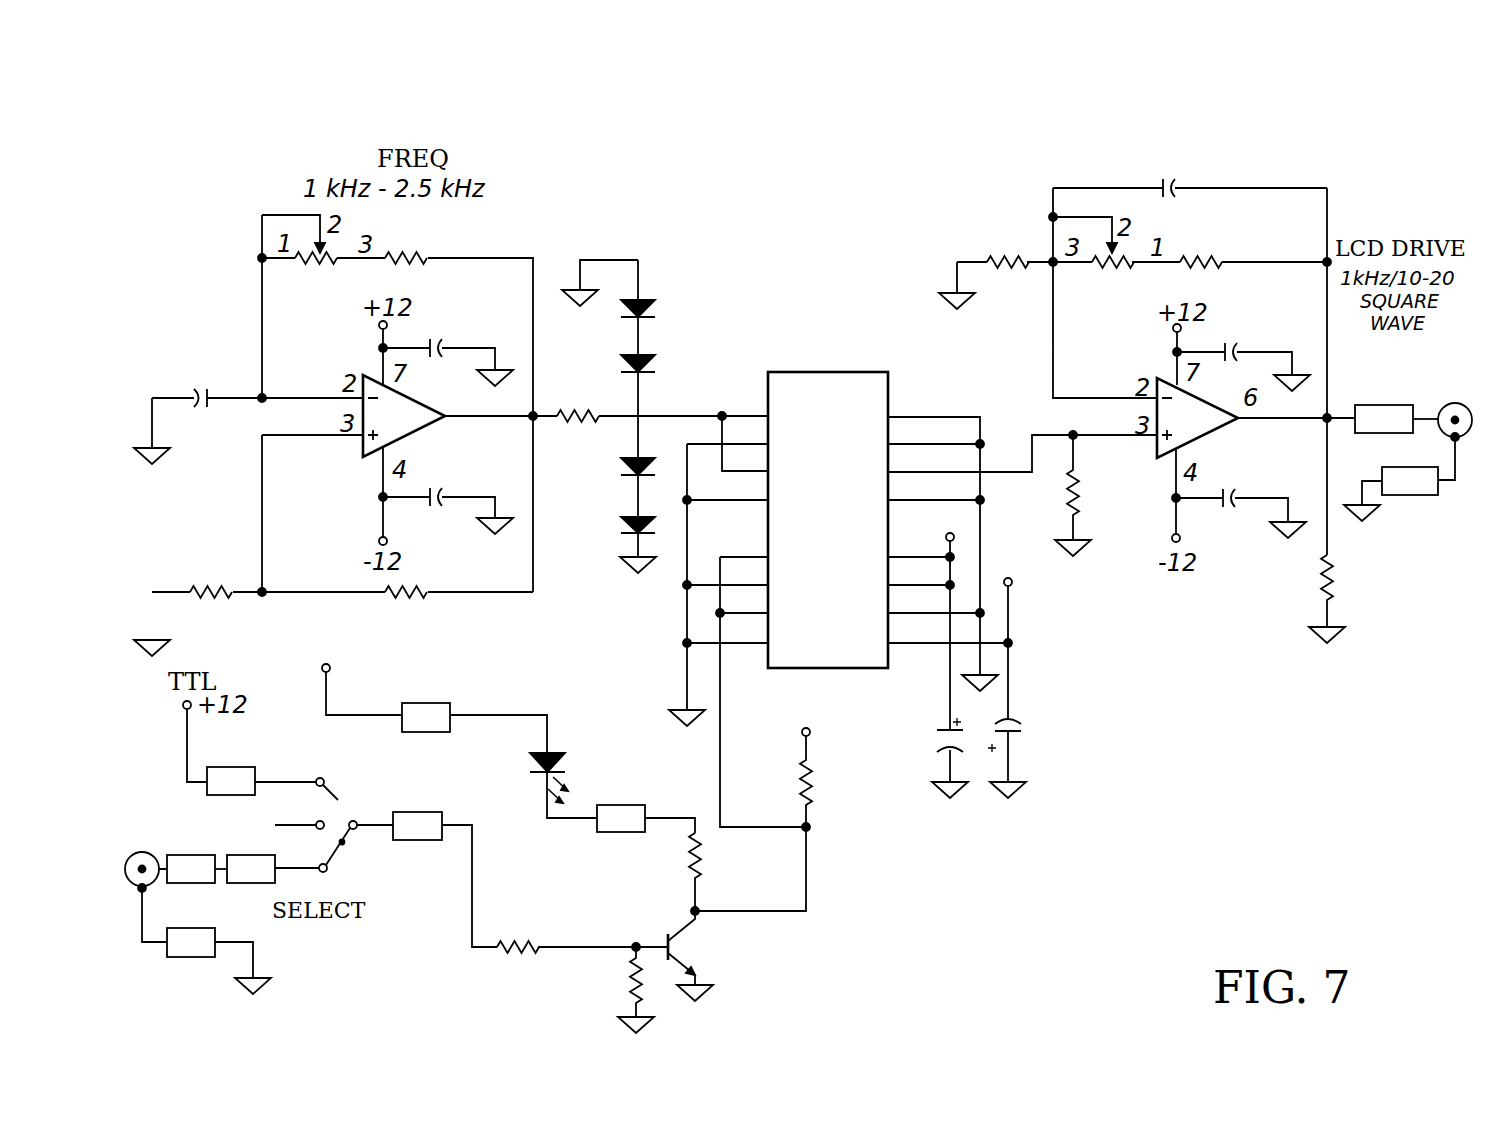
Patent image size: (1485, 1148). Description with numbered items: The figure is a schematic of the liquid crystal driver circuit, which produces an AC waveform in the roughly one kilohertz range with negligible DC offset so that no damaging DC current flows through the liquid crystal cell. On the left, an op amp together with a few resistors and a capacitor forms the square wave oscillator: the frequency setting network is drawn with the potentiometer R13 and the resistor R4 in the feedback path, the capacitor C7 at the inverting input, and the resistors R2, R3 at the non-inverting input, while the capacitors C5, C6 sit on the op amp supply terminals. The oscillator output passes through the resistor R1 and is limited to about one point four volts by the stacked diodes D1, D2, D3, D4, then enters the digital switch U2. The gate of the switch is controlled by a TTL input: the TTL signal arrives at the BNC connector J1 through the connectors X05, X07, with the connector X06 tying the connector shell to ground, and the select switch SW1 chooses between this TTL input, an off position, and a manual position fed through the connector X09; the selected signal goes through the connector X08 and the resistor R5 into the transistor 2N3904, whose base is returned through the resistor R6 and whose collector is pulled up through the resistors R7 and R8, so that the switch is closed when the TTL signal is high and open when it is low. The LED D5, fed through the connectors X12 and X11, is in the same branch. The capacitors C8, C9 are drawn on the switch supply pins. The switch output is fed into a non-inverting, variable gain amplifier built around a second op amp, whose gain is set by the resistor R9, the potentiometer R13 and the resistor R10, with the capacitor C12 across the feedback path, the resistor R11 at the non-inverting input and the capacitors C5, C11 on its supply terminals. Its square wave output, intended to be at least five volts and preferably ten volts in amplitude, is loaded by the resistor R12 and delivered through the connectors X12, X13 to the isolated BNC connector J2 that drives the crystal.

The resistor 2.2K R1 is at (578, 388).
The resistor 100K R2 is at (217, 623).
The resistor 100K R3 is at (417, 623).
The resistor 33K R4 is at (412, 230).
The resistor 2.2K R5 is at (582, 919).
The resistor 10K R6 is at (613, 990).
The resistor 5.5K R7 is at (725, 874).
The resistor 100K R8 is at (788, 803).
The resistor 10K R9 is at (1011, 237).
The resistor 24K R10 is at (1208, 234).
The resistor 1K R11 is at (1092, 495).
The resistor 4.7K R12 is at (1349, 596).
The potentiometer 50K R13 is at (717, 288).
The capacitor .1uF C5 is at (851, 322).
The capacitor .1uF C6 is at (454, 469).
The capacitor .01uF C7 is at (197, 365).
The capacitor .1uF C8 is at (1035, 744).
The capacitor .1uF C9 is at (918, 756).
The capacitor .1uF C11 is at (1245, 470).
The capacitor 10pF C12 is at (1179, 175).
The diode 1N914 D1 is at (682, 286).
The diode 1N914 D2 is at (682, 341).
The diode 1N914 D3 is at (597, 463).
The diode 1N914 D4 is at (597, 523).
The red LED D5 is at (589, 770).
The analog switch SW-06GP U2 is at (913, 547).
The BNC connector J1 is at (152, 872).
The isolated BNC connector J2 is at (1428, 412).
The select switch 1RSW3 SW1 is at (347, 820).
The connector X05 is at (197, 869).
The connector X06 is at (219, 961).
The connector X07 is at (251, 869).
The connector X08 is at (445, 879).
The connector X09 is at (261, 781).
The connector X11 is at (646, 819).
The connector X12 is at (867, 579).
The connector X13 is at (1391, 494).
The NPN transistor 2N3904 is at (737, 956).